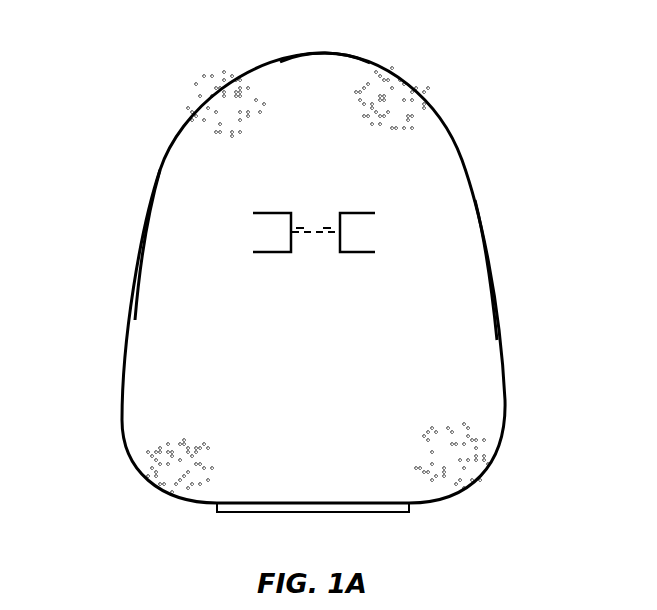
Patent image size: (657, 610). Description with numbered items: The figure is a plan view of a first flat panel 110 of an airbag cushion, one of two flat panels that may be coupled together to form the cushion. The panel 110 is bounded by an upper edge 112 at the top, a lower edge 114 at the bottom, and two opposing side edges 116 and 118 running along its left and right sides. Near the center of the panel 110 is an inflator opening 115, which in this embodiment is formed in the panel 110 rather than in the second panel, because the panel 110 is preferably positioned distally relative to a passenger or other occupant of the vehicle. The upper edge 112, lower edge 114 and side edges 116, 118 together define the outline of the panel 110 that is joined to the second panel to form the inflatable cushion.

The panel 110 is at (470, 98).
The upper edge 112 is at (328, 54).
The lower edge 114 is at (415, 505).
The inflator opening 115 is at (342, 238).
The side edge 116 is at (141, 263).
The side edge 118 is at (488, 285).